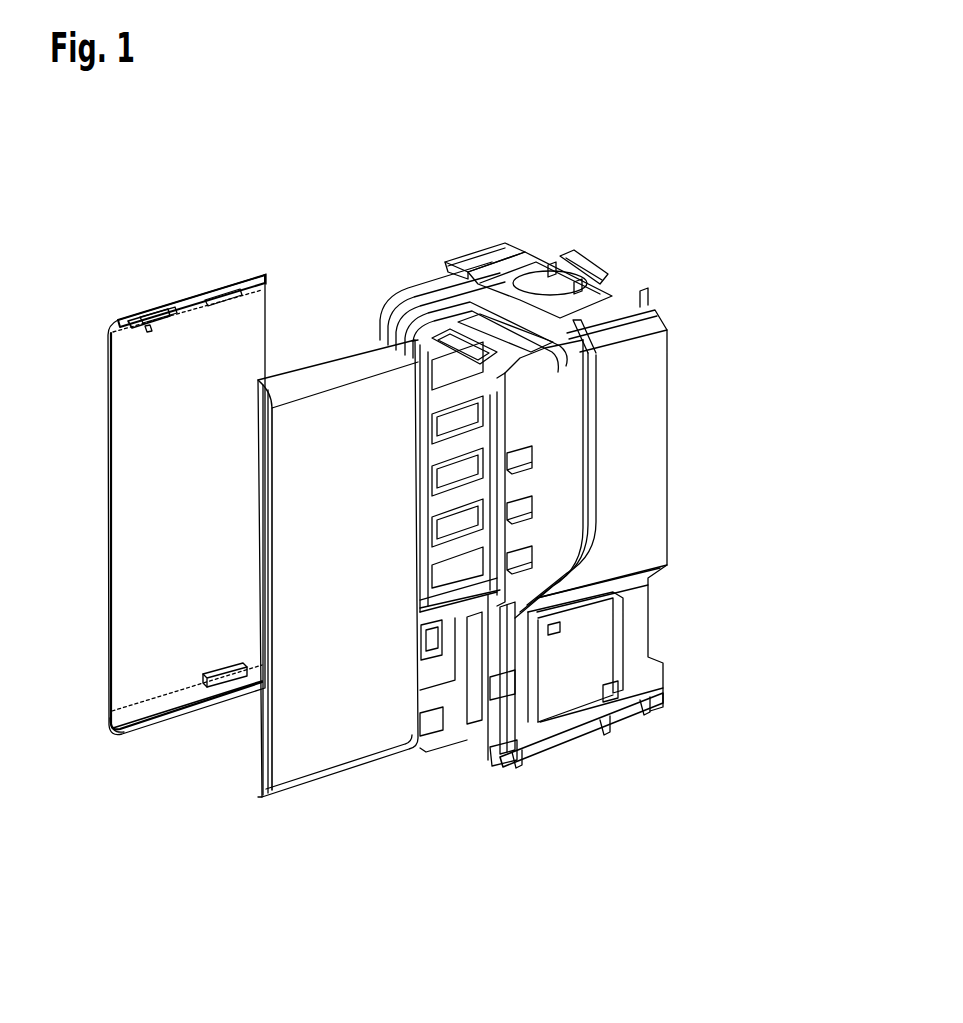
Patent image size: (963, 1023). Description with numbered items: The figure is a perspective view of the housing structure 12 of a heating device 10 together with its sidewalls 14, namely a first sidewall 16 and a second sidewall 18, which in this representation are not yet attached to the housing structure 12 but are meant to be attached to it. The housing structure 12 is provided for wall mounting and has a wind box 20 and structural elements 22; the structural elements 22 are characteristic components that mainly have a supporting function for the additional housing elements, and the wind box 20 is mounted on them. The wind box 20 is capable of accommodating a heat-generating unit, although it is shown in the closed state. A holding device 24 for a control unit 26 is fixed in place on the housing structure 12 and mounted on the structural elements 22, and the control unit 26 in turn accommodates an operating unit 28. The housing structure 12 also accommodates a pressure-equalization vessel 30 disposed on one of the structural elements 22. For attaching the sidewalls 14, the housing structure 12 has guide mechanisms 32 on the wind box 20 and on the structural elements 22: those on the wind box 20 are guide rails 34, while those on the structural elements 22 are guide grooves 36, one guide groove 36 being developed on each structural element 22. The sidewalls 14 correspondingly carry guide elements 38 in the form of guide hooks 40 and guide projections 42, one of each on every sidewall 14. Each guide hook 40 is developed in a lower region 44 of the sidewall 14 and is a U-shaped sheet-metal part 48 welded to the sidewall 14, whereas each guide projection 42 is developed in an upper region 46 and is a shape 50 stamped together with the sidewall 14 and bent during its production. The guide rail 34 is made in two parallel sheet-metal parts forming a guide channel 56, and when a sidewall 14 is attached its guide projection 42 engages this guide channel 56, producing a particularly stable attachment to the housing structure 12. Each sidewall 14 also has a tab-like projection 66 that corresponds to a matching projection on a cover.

The heating device 10 is at (630, 126).
The housing structure 12 is at (614, 251).
The sidewalls 14 is at (143, 522).
The first sidewall 16 is at (126, 687).
The second sidewall 18 is at (338, 742).
The wind box 20 is at (640, 414).
The structural elements 22 is at (642, 666).
The holding device 24 is at (482, 726).
The control unit 26 is at (472, 692).
The operating unit 28 is at (444, 665).
The pressure-equalization vessel 30 is at (426, 298).
The guide mechanisms 32 is at (602, 482).
The guide rails 34 is at (602, 262).
The guide grooves 36 is at (612, 710).
The guide elements 38 is at (189, 277).
The guide hook 40 is at (187, 742).
The guide projection 42 is at (189, 277).
The lower region 44 is at (116, 751).
The upper region 46 is at (256, 266).
The U-shaped sheet-metal parts 48 is at (205, 686).
The shape 50 is at (230, 283).
The guide channel 56 is at (485, 241).
The tab-like projection 66 is at (160, 312).